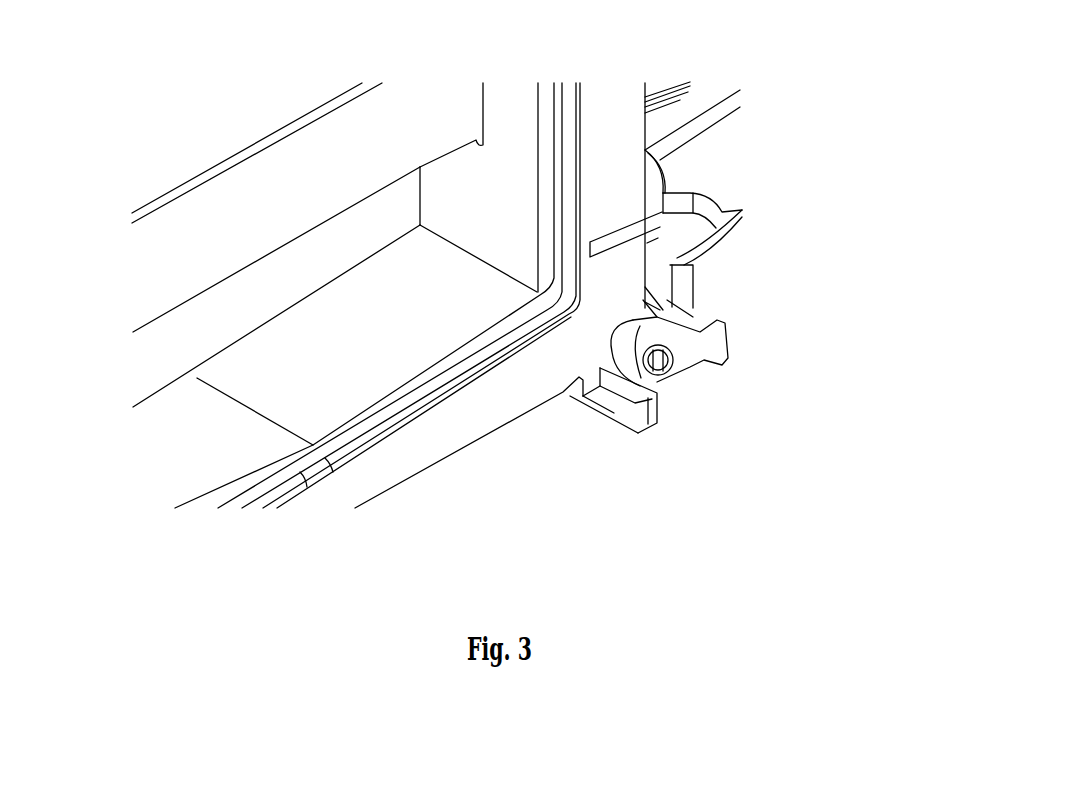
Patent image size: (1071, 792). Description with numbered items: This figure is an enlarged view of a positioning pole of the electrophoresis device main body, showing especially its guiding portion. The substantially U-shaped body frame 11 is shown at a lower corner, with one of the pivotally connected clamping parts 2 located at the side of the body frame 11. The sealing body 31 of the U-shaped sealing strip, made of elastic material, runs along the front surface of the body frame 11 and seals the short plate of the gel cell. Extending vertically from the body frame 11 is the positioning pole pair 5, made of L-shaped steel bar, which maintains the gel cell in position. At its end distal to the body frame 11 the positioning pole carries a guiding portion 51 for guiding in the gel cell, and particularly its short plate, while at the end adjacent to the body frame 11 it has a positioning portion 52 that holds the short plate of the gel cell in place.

The clamping part 2 is at (743, 162).
The U-shaped body frame 11 is at (468, 418).
The sealing body 31 is at (225, 490).
The positioning pole pair 5 is at (657, 425).
The guiding portion 51 is at (622, 418).
The positioning portion 52 is at (597, 402).